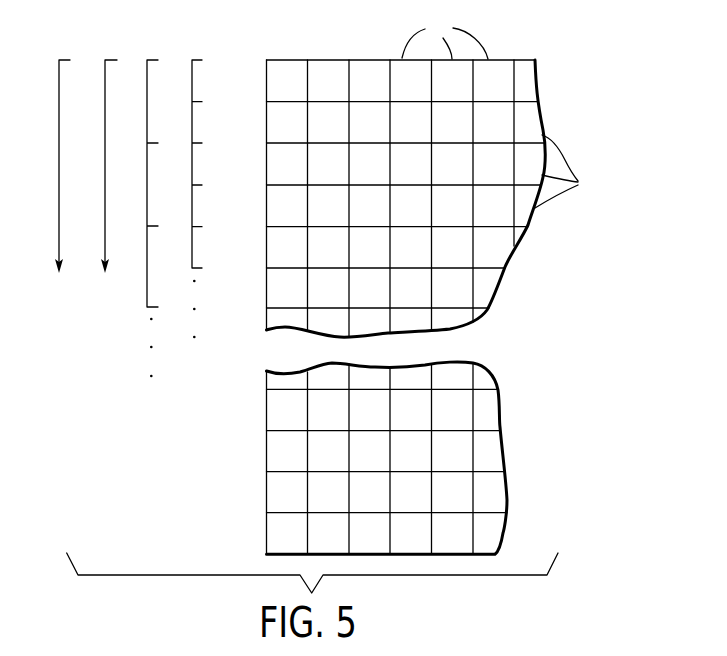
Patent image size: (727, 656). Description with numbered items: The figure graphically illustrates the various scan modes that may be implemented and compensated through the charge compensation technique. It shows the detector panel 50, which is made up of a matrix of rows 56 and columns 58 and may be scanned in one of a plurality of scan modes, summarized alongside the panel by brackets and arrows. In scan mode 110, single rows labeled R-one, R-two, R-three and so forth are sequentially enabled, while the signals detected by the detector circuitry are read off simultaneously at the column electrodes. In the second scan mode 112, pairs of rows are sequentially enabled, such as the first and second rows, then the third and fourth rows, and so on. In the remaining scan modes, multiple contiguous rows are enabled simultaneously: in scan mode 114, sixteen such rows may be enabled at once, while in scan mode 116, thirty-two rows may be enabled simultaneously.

The detector panel 50 is at (530, 257).
The rows 56 is at (571, 171).
The columns 58 is at (445, 36).
The scan mode 110 is at (197, 58).
The second scan mode 112 is at (152, 58).
The scan mode 114 is at (108, 58).
The scan mode 116 is at (62, 58).